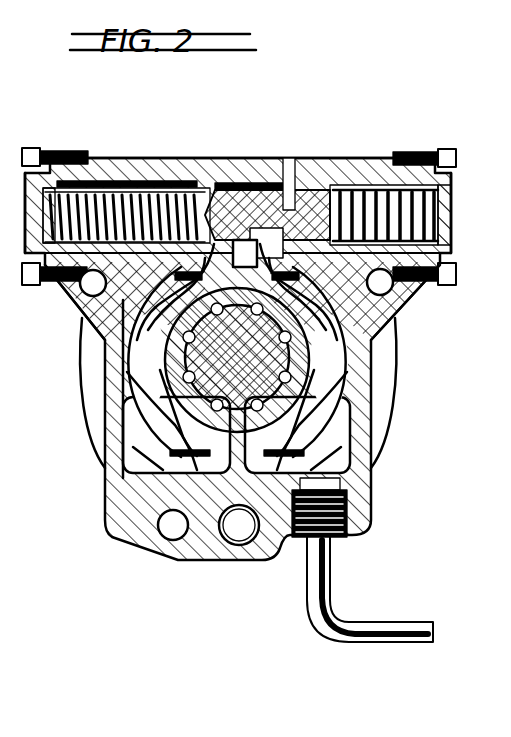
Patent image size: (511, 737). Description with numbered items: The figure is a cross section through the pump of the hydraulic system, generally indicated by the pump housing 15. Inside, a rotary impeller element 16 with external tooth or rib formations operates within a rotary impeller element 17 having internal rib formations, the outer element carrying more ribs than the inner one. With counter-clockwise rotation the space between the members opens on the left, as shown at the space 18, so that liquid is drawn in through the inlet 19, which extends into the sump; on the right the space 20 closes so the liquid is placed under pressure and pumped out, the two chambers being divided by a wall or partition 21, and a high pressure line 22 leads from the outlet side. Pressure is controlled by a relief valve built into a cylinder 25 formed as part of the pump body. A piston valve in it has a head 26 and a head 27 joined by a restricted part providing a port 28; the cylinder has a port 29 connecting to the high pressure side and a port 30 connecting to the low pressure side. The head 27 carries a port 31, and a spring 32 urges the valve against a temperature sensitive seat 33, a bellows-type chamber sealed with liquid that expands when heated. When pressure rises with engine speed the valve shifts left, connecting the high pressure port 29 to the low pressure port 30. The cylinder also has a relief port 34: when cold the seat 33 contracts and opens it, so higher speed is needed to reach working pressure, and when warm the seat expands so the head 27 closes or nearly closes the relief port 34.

The pump housing 15 is at (370, 482).
The rotary impeller element 16 is at (366, 400).
The rotary impeller element 17 is at (340, 360).
The space 18 is at (127, 387).
The inlet 19 is at (247, 535).
The space 20 is at (356, 390).
The wall or partition 21 is at (83, 330).
The high pressure line 22 is at (330, 580).
The cylinder 25 is at (150, 158).
The head 26 is at (193, 158).
The head 27 is at (315, 158).
The port 28 is at (245, 158).
The port 29 is at (369, 308).
The port 30 is at (87, 315).
The port 31 is at (340, 158).
The spring 32 is at (118, 158).
The temperature sensitive seat 33 is at (360, 158).
The relief port 34 is at (285, 158).